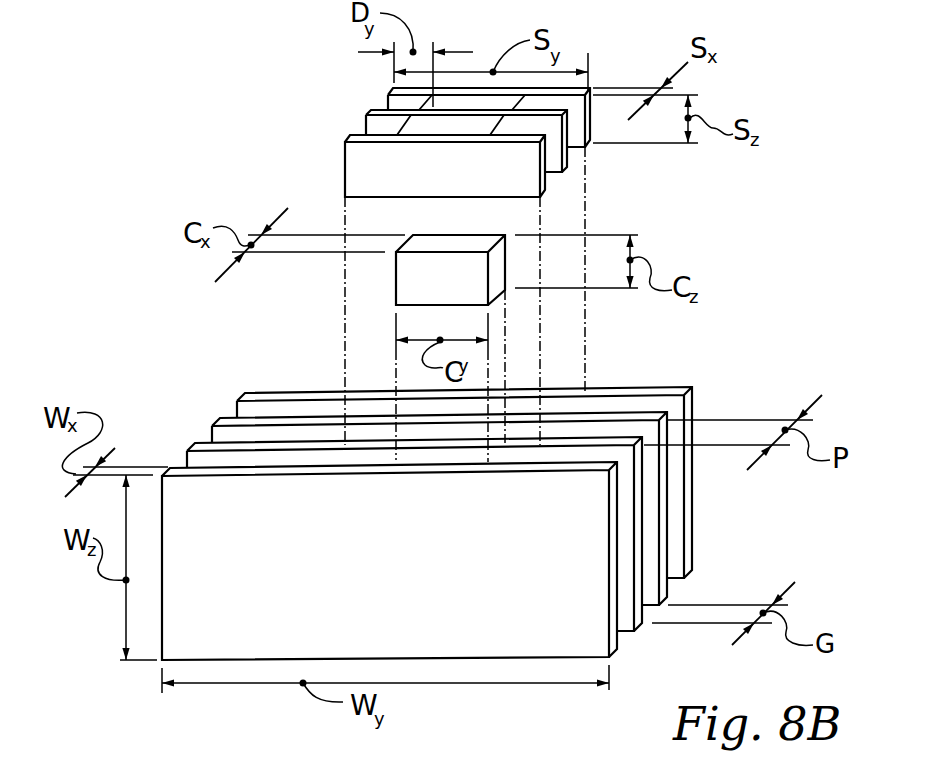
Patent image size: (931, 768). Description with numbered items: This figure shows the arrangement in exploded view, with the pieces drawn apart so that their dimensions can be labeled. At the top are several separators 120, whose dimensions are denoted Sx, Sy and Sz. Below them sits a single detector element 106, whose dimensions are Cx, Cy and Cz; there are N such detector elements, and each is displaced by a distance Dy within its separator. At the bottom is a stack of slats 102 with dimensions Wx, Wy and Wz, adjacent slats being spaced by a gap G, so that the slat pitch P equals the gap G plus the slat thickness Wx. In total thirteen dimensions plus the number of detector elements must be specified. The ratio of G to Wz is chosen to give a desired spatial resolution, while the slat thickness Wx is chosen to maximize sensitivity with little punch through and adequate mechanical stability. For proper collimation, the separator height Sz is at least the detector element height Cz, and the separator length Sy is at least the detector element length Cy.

The separator 120 is at (345, 168).
The detector element 106 is at (428, 240).
The slat 102 is at (628, 388).